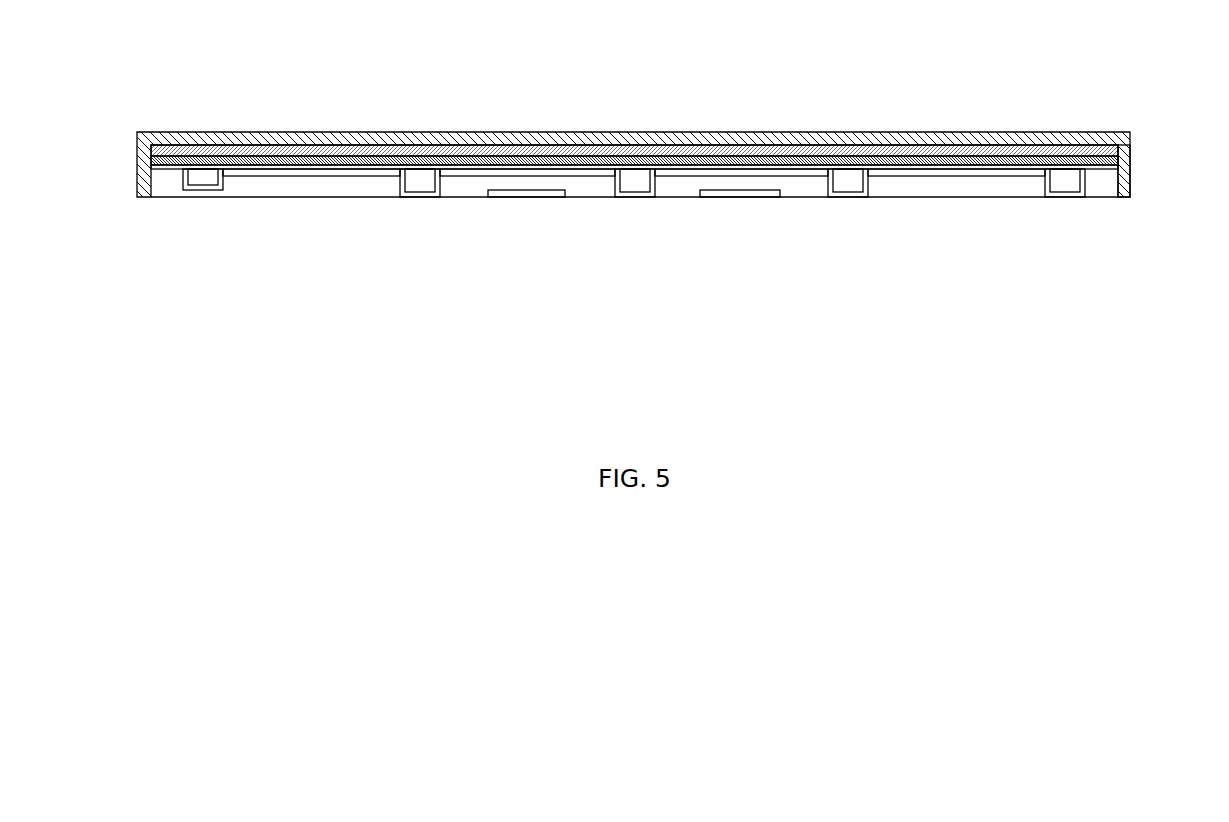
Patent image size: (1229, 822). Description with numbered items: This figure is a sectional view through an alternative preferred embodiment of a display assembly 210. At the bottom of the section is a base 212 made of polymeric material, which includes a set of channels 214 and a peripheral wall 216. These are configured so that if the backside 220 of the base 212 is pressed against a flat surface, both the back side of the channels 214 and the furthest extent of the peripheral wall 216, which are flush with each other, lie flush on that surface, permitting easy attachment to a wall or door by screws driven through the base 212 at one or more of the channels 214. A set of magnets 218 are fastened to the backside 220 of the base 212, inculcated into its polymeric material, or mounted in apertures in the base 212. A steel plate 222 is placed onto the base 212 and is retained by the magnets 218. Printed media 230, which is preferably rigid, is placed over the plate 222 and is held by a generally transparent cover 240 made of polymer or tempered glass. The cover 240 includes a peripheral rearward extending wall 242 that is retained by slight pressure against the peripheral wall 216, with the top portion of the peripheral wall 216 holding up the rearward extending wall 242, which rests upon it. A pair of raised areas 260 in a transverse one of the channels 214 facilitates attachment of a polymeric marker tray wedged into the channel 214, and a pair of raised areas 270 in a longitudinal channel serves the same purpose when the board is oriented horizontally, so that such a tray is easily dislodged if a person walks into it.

The display assembly 210 is at (187, 305).
The base 212 is at (851, 193).
The channels 214 is at (418, 186).
The peripheral wall 216 is at (1108, 172).
The magnets 218 is at (683, 173).
The backside 220 is at (553, 170).
The steel plate 222 is at (279, 160).
The printed media 230 is at (248, 147).
The cover 240 is at (213, 137).
The rearward extending wall 242 is at (1123, 162).
The raised areas 260 is at (205, 190).
The raised areas 270 is at (768, 195).